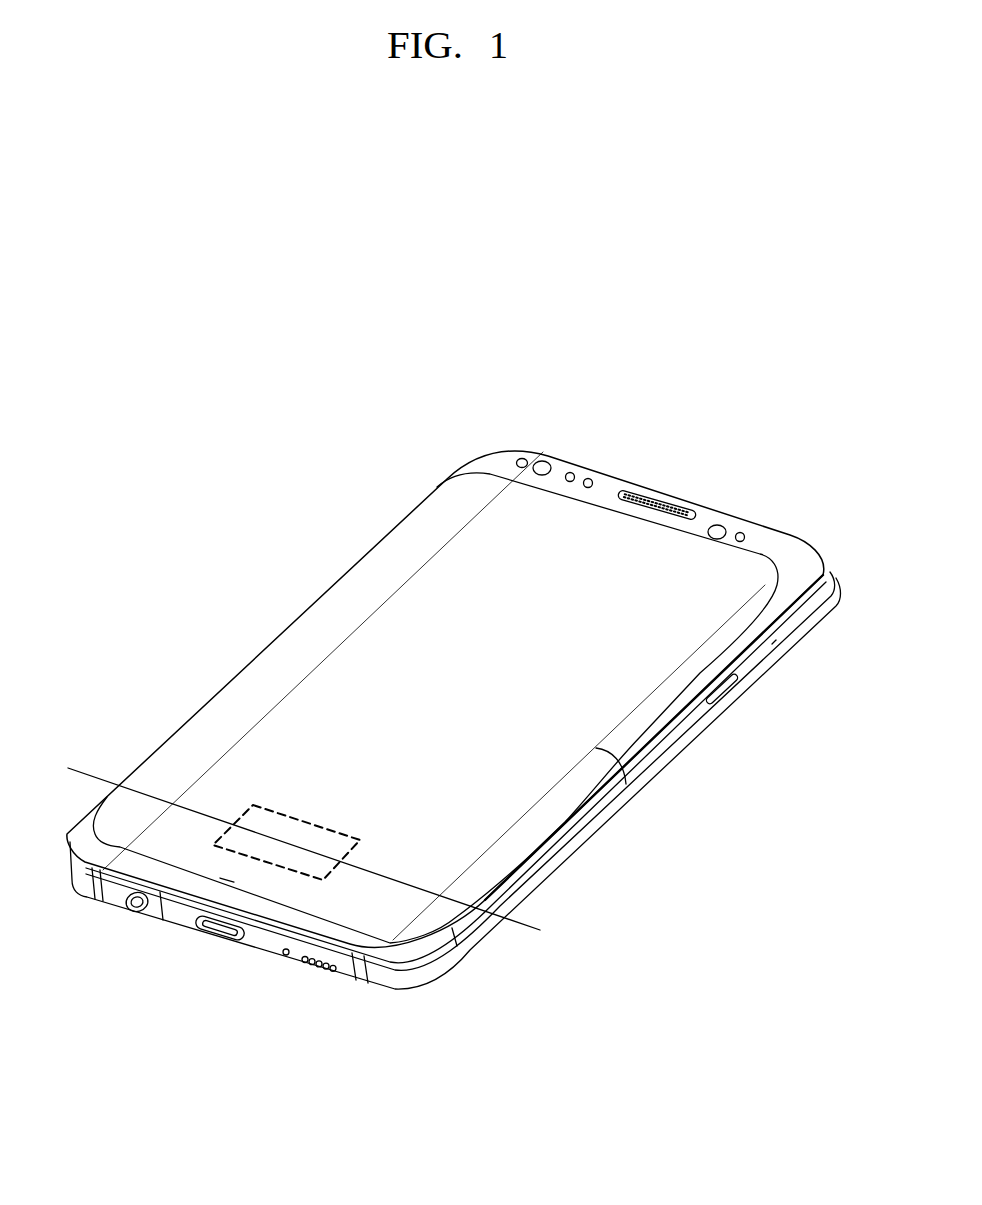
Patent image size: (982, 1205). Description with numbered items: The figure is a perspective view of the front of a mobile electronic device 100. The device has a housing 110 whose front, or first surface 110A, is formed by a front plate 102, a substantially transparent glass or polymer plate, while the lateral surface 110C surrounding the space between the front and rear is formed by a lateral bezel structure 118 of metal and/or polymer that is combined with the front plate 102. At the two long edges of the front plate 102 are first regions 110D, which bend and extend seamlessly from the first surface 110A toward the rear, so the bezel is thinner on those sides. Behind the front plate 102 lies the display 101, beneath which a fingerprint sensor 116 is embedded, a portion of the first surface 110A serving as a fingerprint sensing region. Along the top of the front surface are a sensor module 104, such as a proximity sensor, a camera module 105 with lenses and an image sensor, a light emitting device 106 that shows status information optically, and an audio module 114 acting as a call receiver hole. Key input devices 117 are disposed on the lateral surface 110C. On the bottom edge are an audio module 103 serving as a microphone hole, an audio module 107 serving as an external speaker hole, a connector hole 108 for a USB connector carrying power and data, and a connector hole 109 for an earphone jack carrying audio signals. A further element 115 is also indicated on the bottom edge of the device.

The electronic device 100 is at (266, 606).
The display 101 is at (205, 790).
The front plate 102 is at (765, 553).
The audio module (microphone hole) 103 is at (288, 955).
The sensor module 104 is at (571, 472).
The camera module 105 is at (718, 525).
The light emitting device 106 is at (524, 458).
The audio module (speaker hole) 107 is at (338, 974).
The connector hole 108 is at (224, 948).
The connector hole 109 is at (128, 912).
The housing 110 is at (643, 766).
The first surface 110A is at (425, 606).
The lateral surface 110C is at (586, 818).
The first regions 110D is at (245, 690).
The audio module (speaker hole) 114 is at (657, 502).
The key input device 115 is at (227, 880).
The fingerprint sensor 116 is at (337, 874).
The key input devices 117 is at (731, 697).
The lateral bezel structure 118 is at (773, 642).